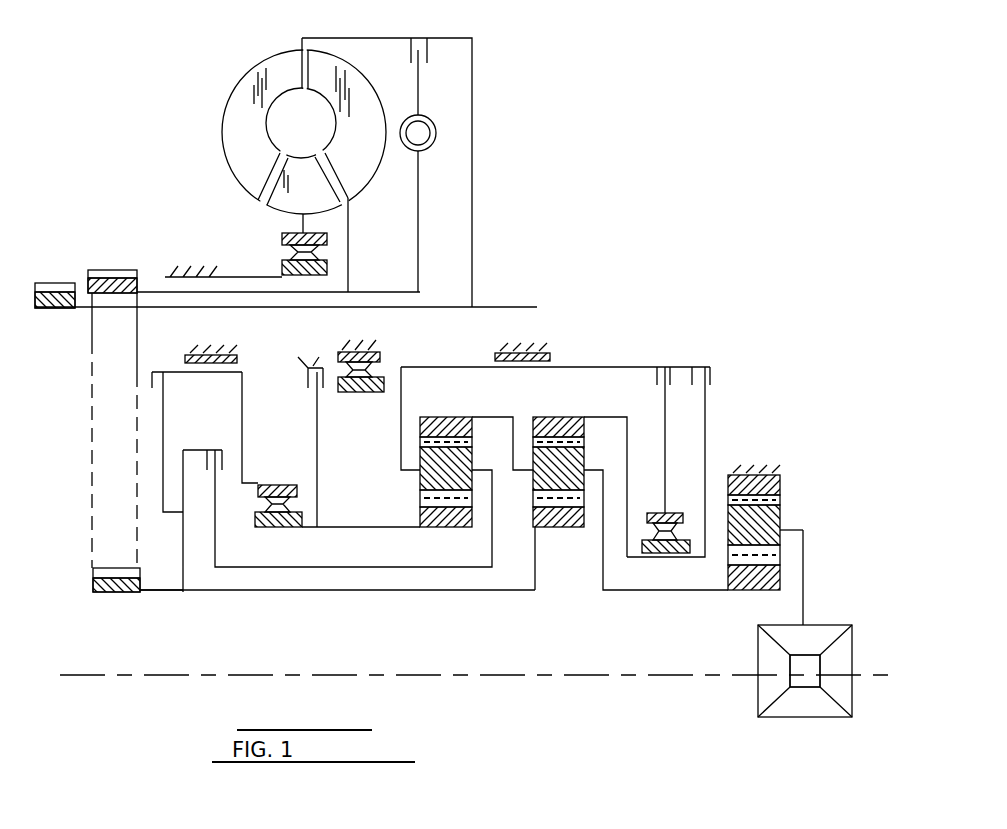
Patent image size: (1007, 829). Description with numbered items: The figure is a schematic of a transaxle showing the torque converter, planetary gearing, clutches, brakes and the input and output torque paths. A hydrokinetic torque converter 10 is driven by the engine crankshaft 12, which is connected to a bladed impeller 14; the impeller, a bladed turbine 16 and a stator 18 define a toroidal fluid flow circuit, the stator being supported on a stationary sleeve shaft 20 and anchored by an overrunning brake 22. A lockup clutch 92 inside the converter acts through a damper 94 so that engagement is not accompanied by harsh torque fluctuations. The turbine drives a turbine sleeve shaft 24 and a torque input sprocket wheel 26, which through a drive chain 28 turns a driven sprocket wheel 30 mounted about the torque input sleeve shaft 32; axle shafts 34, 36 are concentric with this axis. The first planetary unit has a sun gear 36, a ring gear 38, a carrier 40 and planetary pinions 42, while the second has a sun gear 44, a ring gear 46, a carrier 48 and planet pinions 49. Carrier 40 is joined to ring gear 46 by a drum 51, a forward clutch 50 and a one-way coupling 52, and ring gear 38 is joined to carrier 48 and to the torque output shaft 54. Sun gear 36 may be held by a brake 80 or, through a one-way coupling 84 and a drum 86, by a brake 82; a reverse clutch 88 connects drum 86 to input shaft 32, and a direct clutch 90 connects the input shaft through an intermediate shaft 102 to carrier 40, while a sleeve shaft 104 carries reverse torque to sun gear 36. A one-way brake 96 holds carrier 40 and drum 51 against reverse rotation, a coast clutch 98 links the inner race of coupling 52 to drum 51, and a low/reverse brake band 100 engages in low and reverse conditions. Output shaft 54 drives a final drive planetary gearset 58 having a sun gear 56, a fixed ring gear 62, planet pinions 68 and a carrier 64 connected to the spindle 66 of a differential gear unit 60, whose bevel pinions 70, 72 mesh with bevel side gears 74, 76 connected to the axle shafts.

The hydrokinetic torque converter 10 is at (195, 125).
The crankshaft 12 is at (493, 306).
The bladed impeller 14 is at (256, 152).
The bladed turbine 16 is at (365, 152).
The stator 18 is at (319, 202).
The stationary sleeve shaft 20 is at (221, 276).
The overrunning brake 22 is at (297, 252).
The turbine sleeve shaft 24 is at (382, 290).
The torque input sprocket wheel 26 is at (108, 296).
The drive chain 28 is at (108, 592).
The driven sprocket wheel 30 is at (92, 582).
The torque input sleeve shaft 32 is at (158, 592).
The axle shaft 34 is at (598, 676).
The sun gear 36 is at (460, 520).
The ring gear 38 is at (447, 422).
The carrier 40 is at (412, 467).
The planetary pinions 42 is at (425, 483).
The sun gear 44 is at (553, 522).
The ring gear 46 is at (572, 423).
The carrier 48 is at (518, 472).
The planet pinions 49 is at (567, 463).
The forward clutch 50 is at (657, 380).
The drum 51 is at (447, 365).
The one-way coupling 52 is at (671, 513).
The torque output shaft 54 is at (640, 590).
The sun gear 56 is at (738, 586).
The final drive planetary gearset 58 is at (792, 459).
The differential gear unit 60 is at (748, 697).
The ring gear 62 is at (755, 478).
The carrier 64 is at (799, 530).
The spindle 66 is at (804, 567).
The planet pinions 68 is at (731, 520).
The bevel pinion 70 is at (795, 628).
The bevel pinion 72 is at (775, 713).
The bevel side gear 74 is at (838, 652).
The bevel side gear 76 is at (765, 657).
The brake 80 is at (324, 388).
The brake 82 is at (237, 360).
The one-way coupling 84 is at (275, 490).
The drum 86 is at (242, 385).
The reverse clutch 88 is at (152, 379).
The direct clutch 90 is at (207, 461).
The lockup clutch 92 is at (427, 55).
The damper 94 is at (437, 133).
The one-way brake 96 is at (368, 370).
The coast clutch 98 is at (711, 374).
The low/reverse brake band 100 is at (550, 355).
The intermediate shaft 102 is at (348, 592).
The sleeve shaft 104 is at (330, 528).